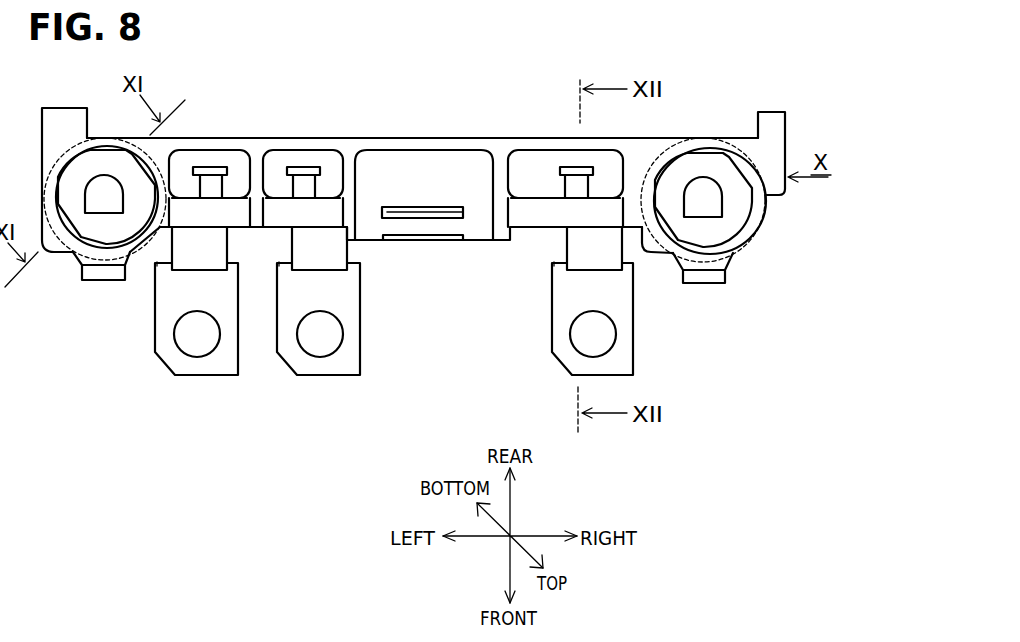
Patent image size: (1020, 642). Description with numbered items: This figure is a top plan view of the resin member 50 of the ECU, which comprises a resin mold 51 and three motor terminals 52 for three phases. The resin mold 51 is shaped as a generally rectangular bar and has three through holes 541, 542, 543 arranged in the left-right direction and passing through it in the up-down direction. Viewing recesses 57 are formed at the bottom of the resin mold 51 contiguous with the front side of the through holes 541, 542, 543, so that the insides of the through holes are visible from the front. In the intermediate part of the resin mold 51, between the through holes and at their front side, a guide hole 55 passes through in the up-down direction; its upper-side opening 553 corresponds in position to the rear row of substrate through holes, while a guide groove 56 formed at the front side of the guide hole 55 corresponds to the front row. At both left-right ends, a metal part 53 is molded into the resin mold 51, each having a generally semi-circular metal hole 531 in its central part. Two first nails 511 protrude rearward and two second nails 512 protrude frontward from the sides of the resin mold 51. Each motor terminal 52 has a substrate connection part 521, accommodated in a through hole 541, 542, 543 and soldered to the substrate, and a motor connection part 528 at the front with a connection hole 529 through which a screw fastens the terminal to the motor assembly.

The resin member 50 is at (480, 137).
The resin mold 51 is at (350, 148).
The first nail 511 is at (52, 122).
The second nail 512 is at (97, 278).
The motor terminal 52 is at (183, 378).
The substrate connection part 521 is at (215, 160).
The motor connection part 528 is at (167, 308).
The connection hole 529 is at (180, 338).
The metal part 53 is at (67, 187).
The metal hole 531 is at (92, 199).
The through hole 541 is at (183, 168).
The through hole 542 is at (273, 163).
The through hole 543 is at (525, 165).
The guide hole 55 is at (392, 213).
The opening 553 is at (418, 215).
The guide groove 56 is at (453, 241).
The viewing recess 57 is at (247, 213).